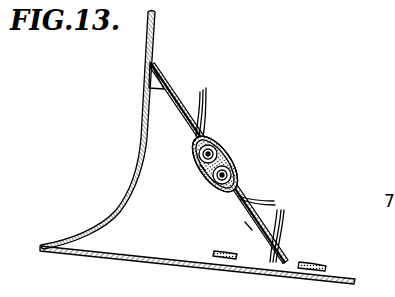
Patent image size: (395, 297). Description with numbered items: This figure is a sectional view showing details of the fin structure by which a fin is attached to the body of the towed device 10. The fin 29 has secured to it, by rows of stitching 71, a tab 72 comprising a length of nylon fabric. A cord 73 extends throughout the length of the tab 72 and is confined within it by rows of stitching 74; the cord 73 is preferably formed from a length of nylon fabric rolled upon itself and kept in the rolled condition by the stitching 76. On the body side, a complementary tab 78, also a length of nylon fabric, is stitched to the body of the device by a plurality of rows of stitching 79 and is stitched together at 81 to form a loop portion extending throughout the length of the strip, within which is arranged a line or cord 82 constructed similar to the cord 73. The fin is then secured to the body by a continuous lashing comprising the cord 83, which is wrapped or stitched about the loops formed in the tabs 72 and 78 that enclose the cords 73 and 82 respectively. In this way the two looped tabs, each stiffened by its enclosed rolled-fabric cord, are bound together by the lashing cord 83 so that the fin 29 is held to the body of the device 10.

The device 10 is at (351, 272).
The fin 29 is at (131, 208).
The rows of stitching 71 is at (152, 59).
The tab 72 is at (175, 102).
The cord 73 is at (218, 157).
The rows of stitching 74 is at (172, 96).
The stitching 76 is at (215, 146).
The complementary tab 78 is at (249, 225).
The rows of stitching 79 is at (309, 264).
The stitching 81 is at (266, 228).
The line or cord 82 is at (236, 177).
The cord 83 is at (200, 168).